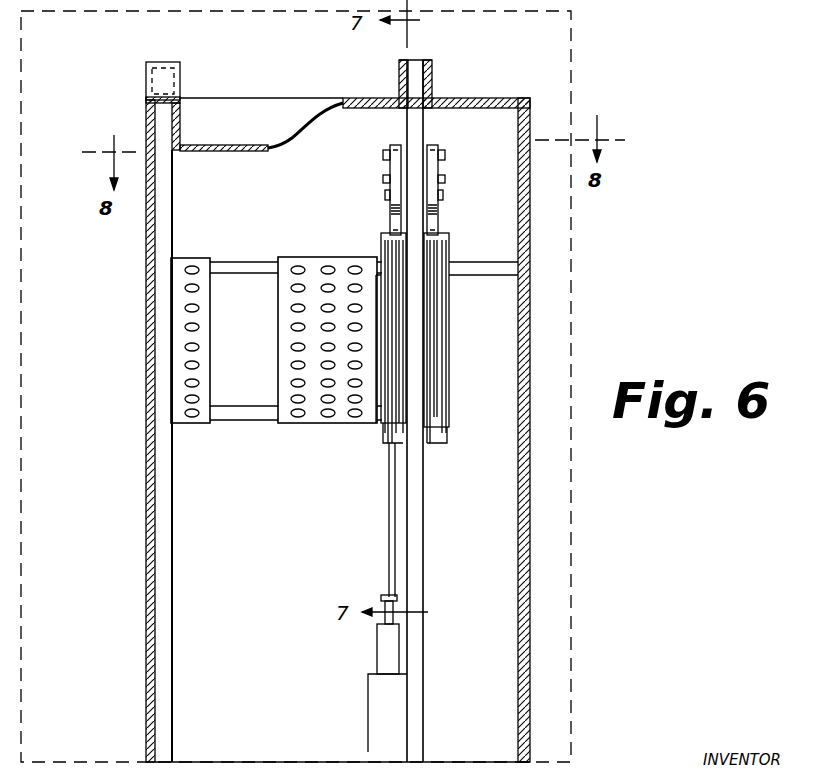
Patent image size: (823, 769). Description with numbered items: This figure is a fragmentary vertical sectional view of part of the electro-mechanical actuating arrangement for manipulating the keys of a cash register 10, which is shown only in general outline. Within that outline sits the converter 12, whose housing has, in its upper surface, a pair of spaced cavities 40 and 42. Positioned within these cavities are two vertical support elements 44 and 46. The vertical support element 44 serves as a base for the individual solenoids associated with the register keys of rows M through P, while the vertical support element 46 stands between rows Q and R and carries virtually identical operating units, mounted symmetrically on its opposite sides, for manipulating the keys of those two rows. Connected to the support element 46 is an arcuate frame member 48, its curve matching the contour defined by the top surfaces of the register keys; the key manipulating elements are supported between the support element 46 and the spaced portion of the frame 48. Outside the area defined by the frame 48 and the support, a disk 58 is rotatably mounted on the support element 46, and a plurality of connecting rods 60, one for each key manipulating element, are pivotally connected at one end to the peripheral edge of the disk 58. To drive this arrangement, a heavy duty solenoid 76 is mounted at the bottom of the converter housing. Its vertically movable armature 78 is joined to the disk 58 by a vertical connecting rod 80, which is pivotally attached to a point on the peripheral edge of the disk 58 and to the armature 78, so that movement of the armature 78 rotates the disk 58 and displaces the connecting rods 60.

The cash register 10 is at (571, 270).
The converter 12 is at (146, 566).
The cavity 40 is at (175, 77).
The cavity 42 is at (428, 82).
The vertical support element 44 is at (173, 598).
The vertical support element 46 is at (424, 548).
The arcuate frame member 48 is at (382, 240).
The disk 58 is at (393, 146).
The connecting rod 60 is at (392, 158).
The heavy duty solenoid 76 is at (368, 712).
The armature 78 is at (377, 645).
The vertical connecting rod 80 is at (389, 516).